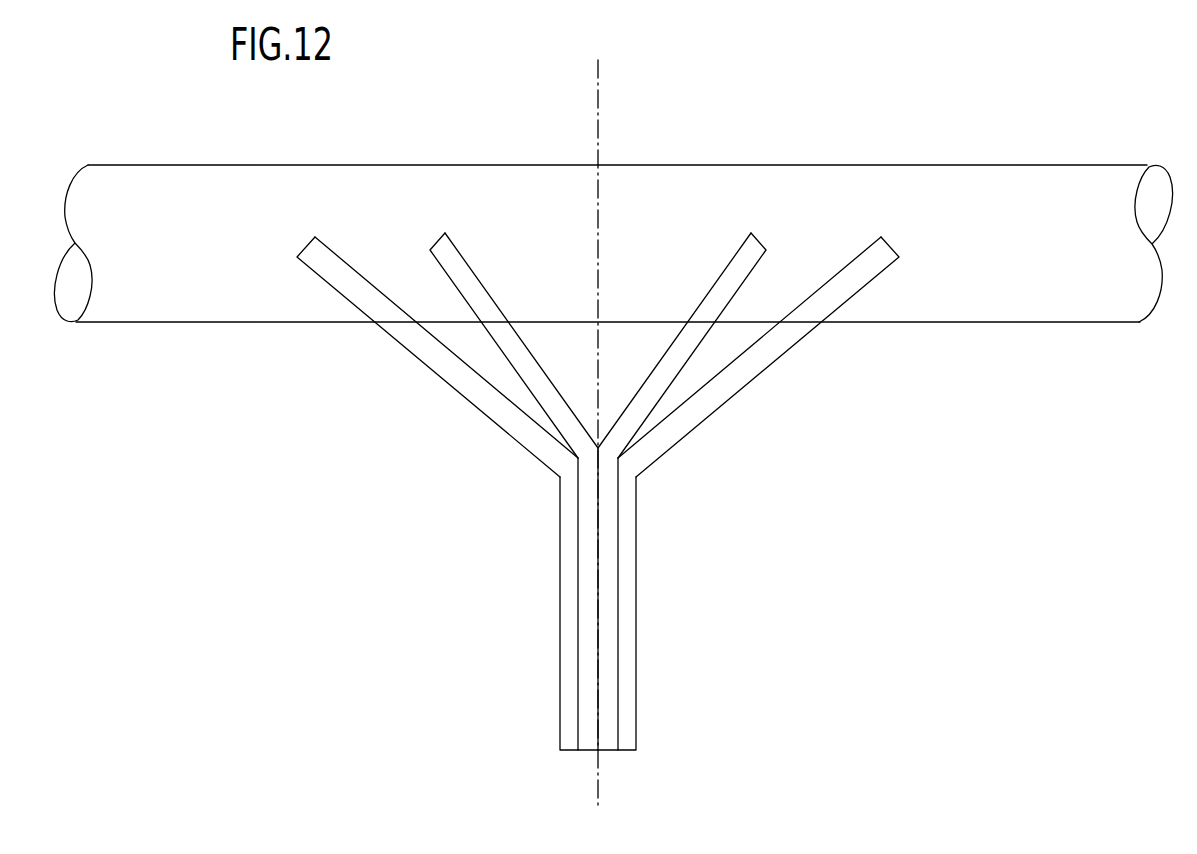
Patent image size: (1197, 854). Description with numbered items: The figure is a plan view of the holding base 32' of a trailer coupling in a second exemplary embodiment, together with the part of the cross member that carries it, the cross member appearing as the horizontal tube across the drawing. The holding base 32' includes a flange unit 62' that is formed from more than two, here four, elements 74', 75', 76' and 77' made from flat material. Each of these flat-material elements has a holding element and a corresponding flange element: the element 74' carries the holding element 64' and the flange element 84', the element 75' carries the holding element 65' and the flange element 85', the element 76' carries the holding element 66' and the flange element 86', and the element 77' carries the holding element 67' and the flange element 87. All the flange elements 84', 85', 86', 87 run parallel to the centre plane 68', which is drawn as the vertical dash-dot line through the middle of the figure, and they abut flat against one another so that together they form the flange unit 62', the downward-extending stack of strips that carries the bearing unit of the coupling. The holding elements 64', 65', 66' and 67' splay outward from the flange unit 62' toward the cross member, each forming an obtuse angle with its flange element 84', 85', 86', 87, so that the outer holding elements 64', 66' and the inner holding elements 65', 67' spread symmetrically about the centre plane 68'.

The centre plane 68' is at (645, 432).
The holding base 32' is at (599, 481).
The flange unit 62' is at (599, 481).
The holding element 64' is at (428, 357).
The element made from flat material 74' is at (446, 347).
The holding element 65' is at (472, 345).
The element made from flat material 75' is at (469, 330).
The holding element 66' is at (768, 357).
The element made from flat material 76' is at (749, 347).
The holding element 67' is at (719, 345).
The element made from flat material 77' is at (728, 331).
The flange element 84' is at (532, 604).
The flange element 85' is at (542, 599).
The flange element 86' is at (668, 604).
The flange element 87 is at (608, 713).